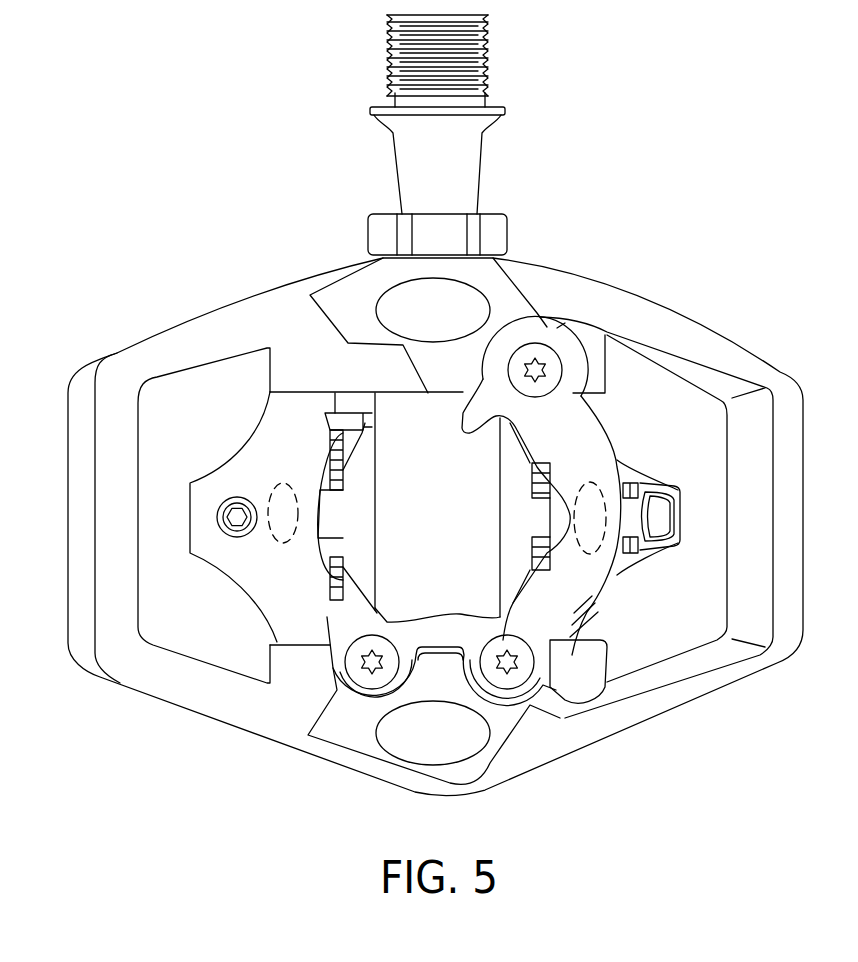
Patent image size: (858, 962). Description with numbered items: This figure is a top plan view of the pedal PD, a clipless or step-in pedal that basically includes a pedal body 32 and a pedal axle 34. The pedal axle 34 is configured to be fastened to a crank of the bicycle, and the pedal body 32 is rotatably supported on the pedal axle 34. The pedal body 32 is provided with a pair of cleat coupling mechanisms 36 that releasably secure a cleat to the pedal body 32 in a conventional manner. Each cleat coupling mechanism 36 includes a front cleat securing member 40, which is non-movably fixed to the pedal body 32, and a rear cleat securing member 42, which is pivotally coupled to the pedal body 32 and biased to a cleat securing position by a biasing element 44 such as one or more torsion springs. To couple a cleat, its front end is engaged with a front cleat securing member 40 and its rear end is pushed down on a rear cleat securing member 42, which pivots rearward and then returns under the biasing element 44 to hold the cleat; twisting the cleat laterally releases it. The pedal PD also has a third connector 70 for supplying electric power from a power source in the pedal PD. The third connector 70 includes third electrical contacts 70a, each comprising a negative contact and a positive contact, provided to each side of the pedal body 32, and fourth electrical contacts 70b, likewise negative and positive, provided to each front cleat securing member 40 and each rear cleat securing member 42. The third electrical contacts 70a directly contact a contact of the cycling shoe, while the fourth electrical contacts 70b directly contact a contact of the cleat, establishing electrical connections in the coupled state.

The pedal PD is at (750, 296).
The pedal body 32 is at (217, 727).
The pedal axle 34 is at (488, 170).
The cleat coupling mechanism 36 is at (617, 607).
The front cleat securing member 40 is at (618, 570).
The rear cleat securing member 42 is at (246, 443).
The biasing element 44 is at (348, 495).
The third connector 70 is at (482, 282).
The third electrical contact 70a is at (400, 310).
The fourth electrical contact 70b is at (280, 540).